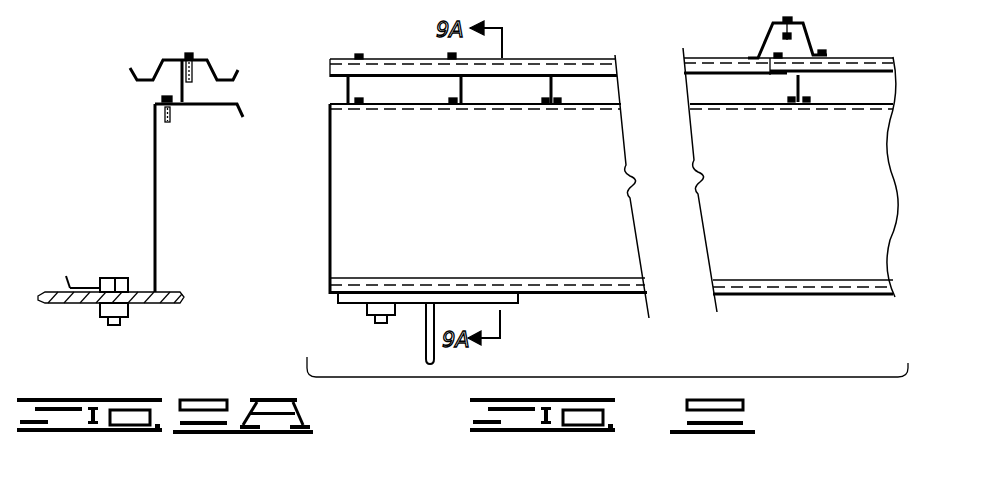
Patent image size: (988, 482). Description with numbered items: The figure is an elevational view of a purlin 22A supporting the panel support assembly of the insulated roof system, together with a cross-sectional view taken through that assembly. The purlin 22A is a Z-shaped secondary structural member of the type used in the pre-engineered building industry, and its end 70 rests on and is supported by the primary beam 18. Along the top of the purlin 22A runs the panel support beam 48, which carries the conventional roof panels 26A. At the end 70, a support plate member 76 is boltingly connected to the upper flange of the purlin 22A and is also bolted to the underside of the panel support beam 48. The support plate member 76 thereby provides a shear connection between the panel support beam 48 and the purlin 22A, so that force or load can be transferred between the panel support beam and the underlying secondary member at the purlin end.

In FIG. 9A, the primary beam 18 is at (180, 295).
In FIG. 9, the primary beam 18 is at (436, 352).
In FIG. 9A, the purlin 22A is at (153, 191).
In FIG. 9, the purlin 22A is at (512, 213).
In FIG. 9, the roof panel 26A is at (762, 33).
In FIG. 9A, the panel support beam 48 is at (170, 58).
In FIG. 9, the panel support beam 48 is at (522, 65).
In FIG. 9, the end of purlin 70 is at (347, 163).
In FIG. 9A, the support plate member 76 is at (179, 95).
In FIG. 9, the support plate member 76 is at (345, 93).